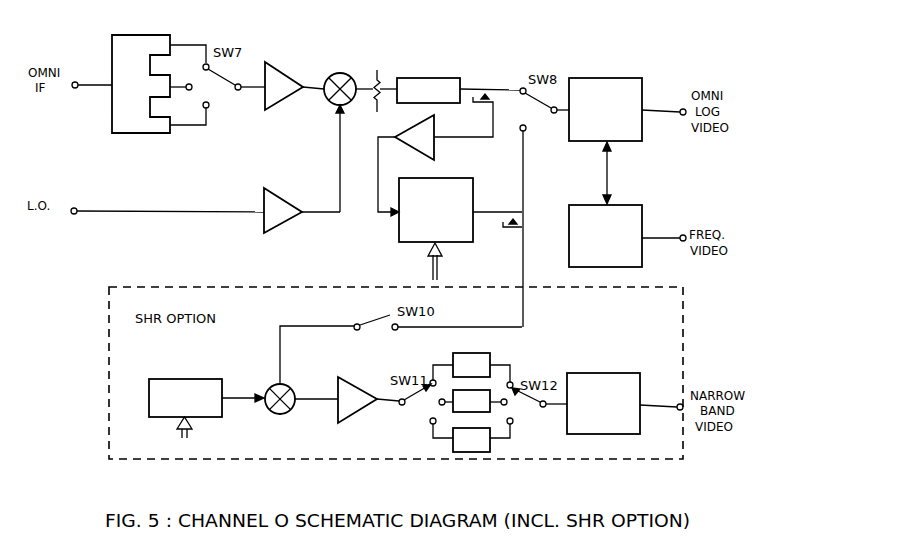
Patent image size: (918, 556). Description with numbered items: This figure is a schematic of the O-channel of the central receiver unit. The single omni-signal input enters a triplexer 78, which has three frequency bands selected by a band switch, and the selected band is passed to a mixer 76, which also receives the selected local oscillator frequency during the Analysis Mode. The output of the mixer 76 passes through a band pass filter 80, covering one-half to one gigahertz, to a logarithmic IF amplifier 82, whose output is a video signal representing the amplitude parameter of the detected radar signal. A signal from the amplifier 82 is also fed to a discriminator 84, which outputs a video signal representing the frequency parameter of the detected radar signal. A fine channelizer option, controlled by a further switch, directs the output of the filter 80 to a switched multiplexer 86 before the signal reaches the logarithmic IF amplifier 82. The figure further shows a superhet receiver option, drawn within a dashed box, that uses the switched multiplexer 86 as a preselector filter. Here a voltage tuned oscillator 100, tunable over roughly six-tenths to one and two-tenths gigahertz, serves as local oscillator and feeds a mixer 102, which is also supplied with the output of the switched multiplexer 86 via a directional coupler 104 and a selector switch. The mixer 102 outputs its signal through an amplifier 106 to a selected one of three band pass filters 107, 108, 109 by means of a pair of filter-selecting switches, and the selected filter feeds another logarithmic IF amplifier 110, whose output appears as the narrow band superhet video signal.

The triplexer 78 is at (149, 35).
The mixer 76 is at (342, 73).
The band pass filter 80 is at (440, 78).
The logarithmic IF amplifier 82 is at (620, 78).
The discriminator 84 is at (644, 216).
The switched multiplexer 86 is at (476, 191).
The directional coupler 104 is at (520, 222).
The voltage tuned oscillator 100 is at (195, 379).
The mixer 102 is at (295, 389).
The amplifier 106 is at (367, 389).
The band pass filter 107 is at (492, 359).
The band pass filter 108 is at (496, 393).
The band pass filter 109 is at (493, 429).
The logarithmic IF amplifier 110 is at (612, 373).